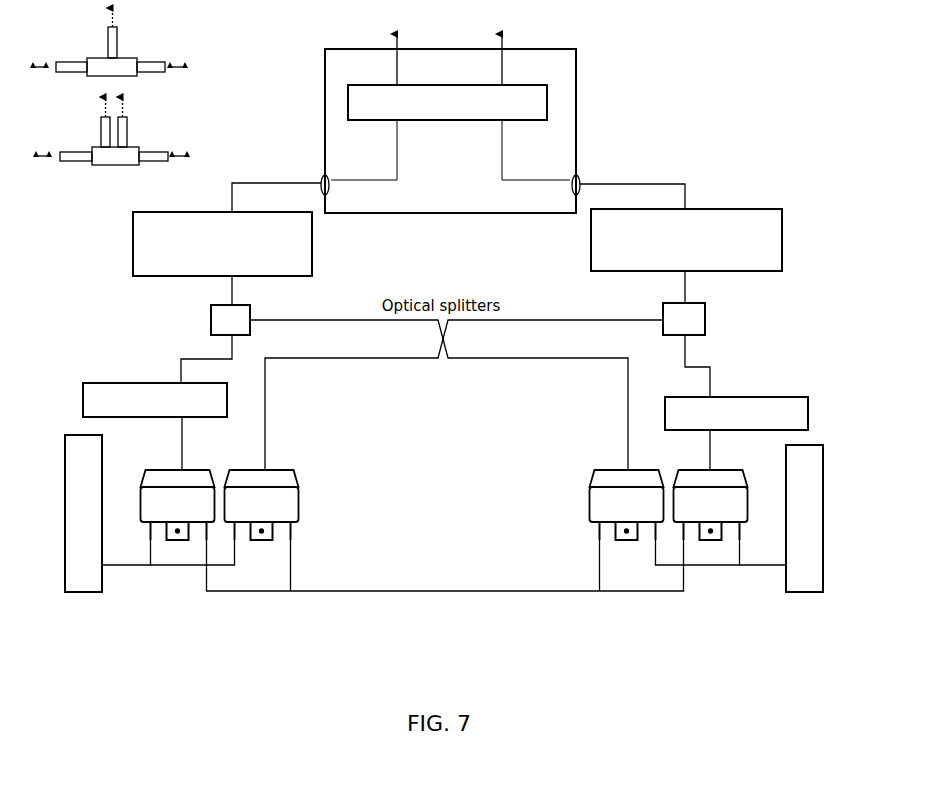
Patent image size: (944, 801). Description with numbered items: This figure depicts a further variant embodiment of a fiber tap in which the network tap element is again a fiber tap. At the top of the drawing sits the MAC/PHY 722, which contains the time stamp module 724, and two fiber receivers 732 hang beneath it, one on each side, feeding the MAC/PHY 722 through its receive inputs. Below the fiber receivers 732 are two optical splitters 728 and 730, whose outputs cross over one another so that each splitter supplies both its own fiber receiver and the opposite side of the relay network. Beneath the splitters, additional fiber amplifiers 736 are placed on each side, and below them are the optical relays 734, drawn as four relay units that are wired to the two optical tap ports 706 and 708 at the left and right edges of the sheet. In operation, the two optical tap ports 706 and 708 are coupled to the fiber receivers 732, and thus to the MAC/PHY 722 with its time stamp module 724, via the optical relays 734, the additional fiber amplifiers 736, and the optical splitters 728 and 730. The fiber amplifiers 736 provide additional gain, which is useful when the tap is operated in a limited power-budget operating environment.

The MAC/PHY 722 is at (630, 139).
The time stamp module 724 is at (466, 155).
The fiber receivers 732 is at (365, 259).
The optical splitter 728 is at (308, 314).
The optical splitter 730 is at (663, 318).
The fiber amplifiers 736 is at (133, 381).
The optical relays 734 is at (447, 600).
The optical tap port 706 is at (85, 593).
The optical tap port 708 is at (807, 593).